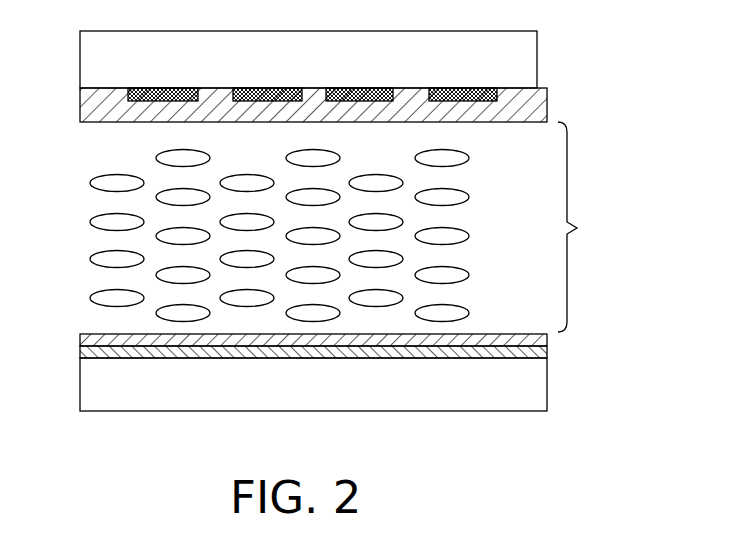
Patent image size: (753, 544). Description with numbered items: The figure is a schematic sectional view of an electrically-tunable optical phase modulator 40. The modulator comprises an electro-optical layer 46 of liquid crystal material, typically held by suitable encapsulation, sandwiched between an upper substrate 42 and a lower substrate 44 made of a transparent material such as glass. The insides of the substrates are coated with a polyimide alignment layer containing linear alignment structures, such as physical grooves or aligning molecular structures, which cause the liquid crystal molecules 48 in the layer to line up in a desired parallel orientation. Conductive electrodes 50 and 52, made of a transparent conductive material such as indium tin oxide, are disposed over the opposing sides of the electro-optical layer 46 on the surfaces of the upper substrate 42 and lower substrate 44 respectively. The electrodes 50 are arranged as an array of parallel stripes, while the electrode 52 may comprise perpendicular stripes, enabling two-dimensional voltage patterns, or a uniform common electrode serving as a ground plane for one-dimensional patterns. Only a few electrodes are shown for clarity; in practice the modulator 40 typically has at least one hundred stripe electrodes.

The optical phase modulator 40 is at (617, 78).
The upper substrate 42 is at (532, 49).
The lower substrate 44 is at (540, 388).
The electro-optical layer 46 is at (587, 227).
The liquid crystal molecules 48 is at (469, 236).
The electrodes 50 is at (148, 88).
The electrodes 52 is at (80, 352).